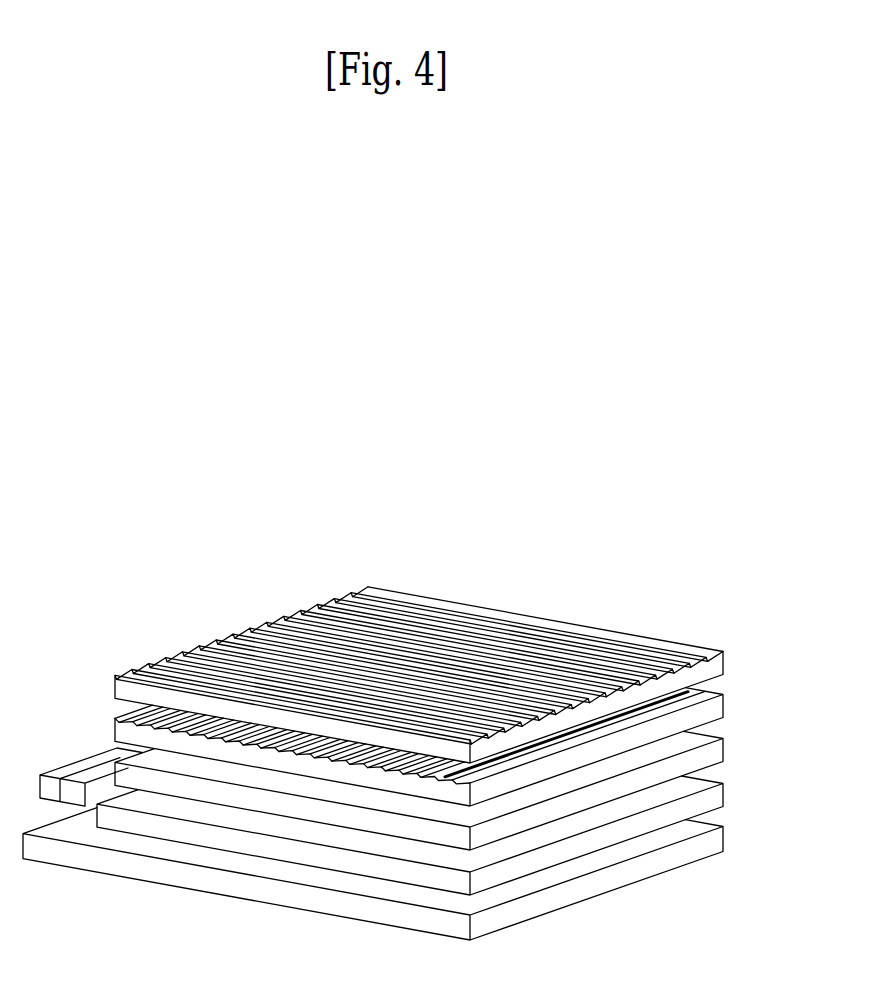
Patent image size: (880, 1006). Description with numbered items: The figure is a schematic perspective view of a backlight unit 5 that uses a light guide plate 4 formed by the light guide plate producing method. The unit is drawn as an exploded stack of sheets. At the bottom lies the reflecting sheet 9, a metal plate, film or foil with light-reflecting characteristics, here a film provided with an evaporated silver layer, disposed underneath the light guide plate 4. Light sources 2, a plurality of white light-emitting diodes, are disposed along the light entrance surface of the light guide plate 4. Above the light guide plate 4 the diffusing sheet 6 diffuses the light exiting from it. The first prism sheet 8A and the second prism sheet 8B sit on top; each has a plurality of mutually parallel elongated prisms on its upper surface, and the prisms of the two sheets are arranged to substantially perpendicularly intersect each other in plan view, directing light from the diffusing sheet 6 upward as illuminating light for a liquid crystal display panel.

The backlight unit 5 is at (676, 573).
The light sources 2 is at (95, 772).
The light guide plate 4 is at (723, 792).
The diffusing sheet 6 is at (723, 752).
The first prism sheet 8A is at (723, 695).
The second prism sheet 8B is at (723, 662).
The reflecting sheet 9 is at (723, 837).